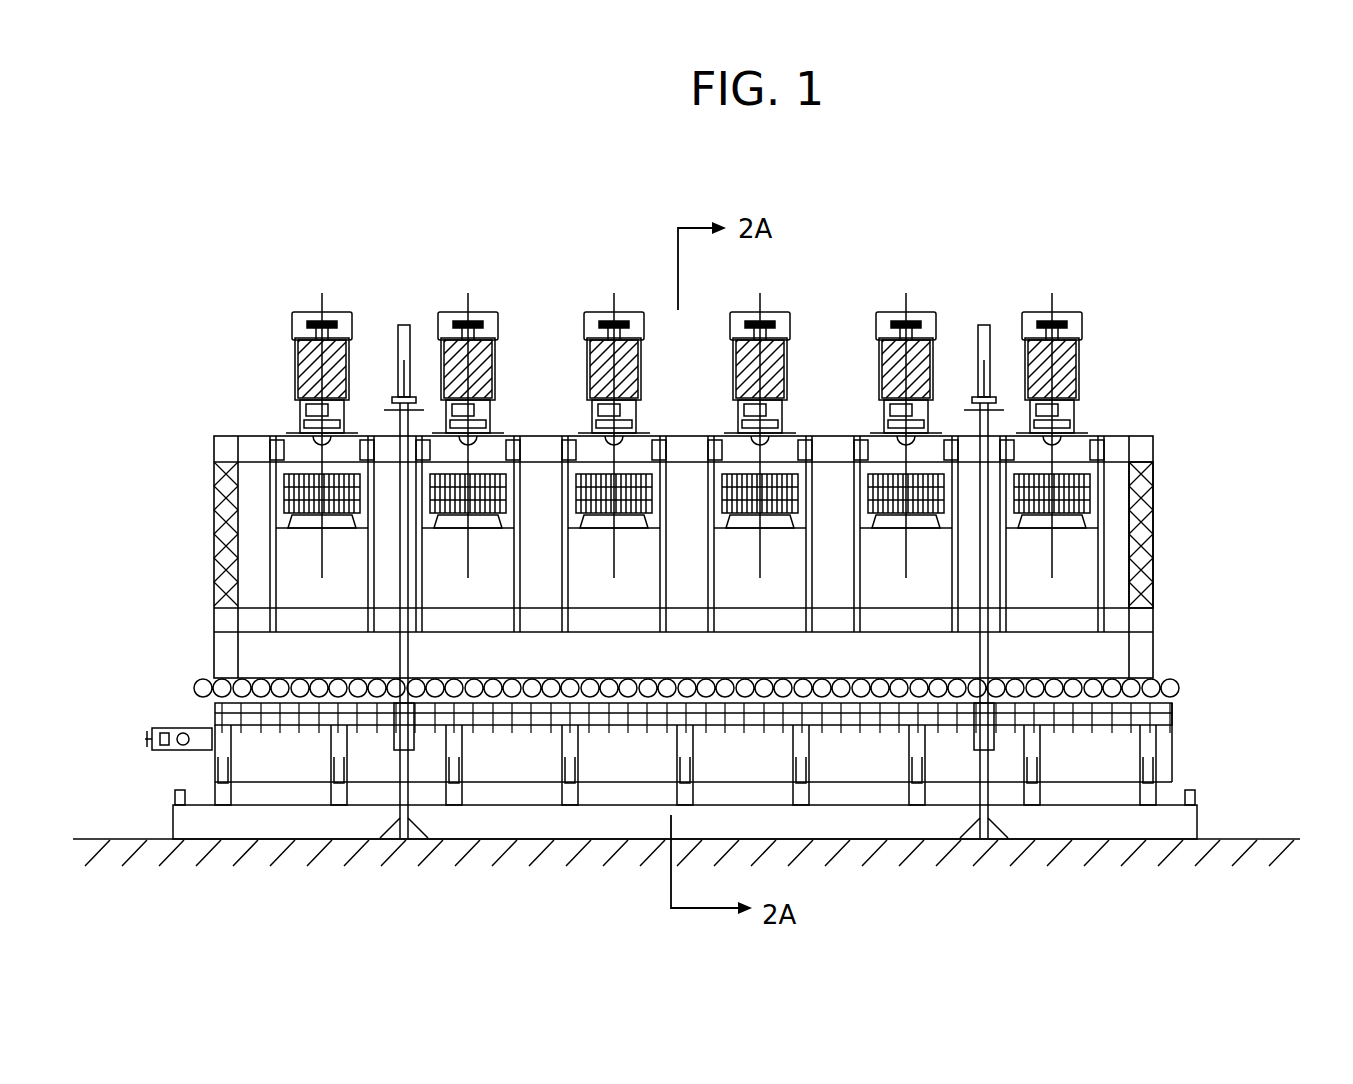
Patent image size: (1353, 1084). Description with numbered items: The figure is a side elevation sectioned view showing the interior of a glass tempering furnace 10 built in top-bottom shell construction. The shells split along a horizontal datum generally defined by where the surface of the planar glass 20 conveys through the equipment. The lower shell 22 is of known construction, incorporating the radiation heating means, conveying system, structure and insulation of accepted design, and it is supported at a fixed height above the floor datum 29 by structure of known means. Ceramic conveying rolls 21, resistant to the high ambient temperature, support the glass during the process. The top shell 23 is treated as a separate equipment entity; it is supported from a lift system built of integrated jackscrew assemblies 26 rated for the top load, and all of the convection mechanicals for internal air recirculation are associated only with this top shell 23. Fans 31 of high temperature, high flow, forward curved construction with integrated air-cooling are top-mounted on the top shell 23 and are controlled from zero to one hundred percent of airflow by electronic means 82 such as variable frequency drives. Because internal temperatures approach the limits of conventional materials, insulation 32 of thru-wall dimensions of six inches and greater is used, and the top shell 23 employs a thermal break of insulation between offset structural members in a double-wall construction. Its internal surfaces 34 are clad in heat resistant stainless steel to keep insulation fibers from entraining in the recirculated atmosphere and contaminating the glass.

The furnace 10 is at (1003, 246).
The planar glass 20 is at (490, 678).
The conveying rolls 21 is at (1070, 682).
The lower shell 22 is at (1170, 720).
The top shell 23 is at (1157, 508).
The jackscrew assemblies 26 is at (398, 330).
The floor datum 29 is at (120, 838).
The fans 31 is at (636, 312).
The insulation 32 is at (220, 485).
The internal surfaces 34 is at (1125, 547).
The electronic means 82 is at (684, 435).